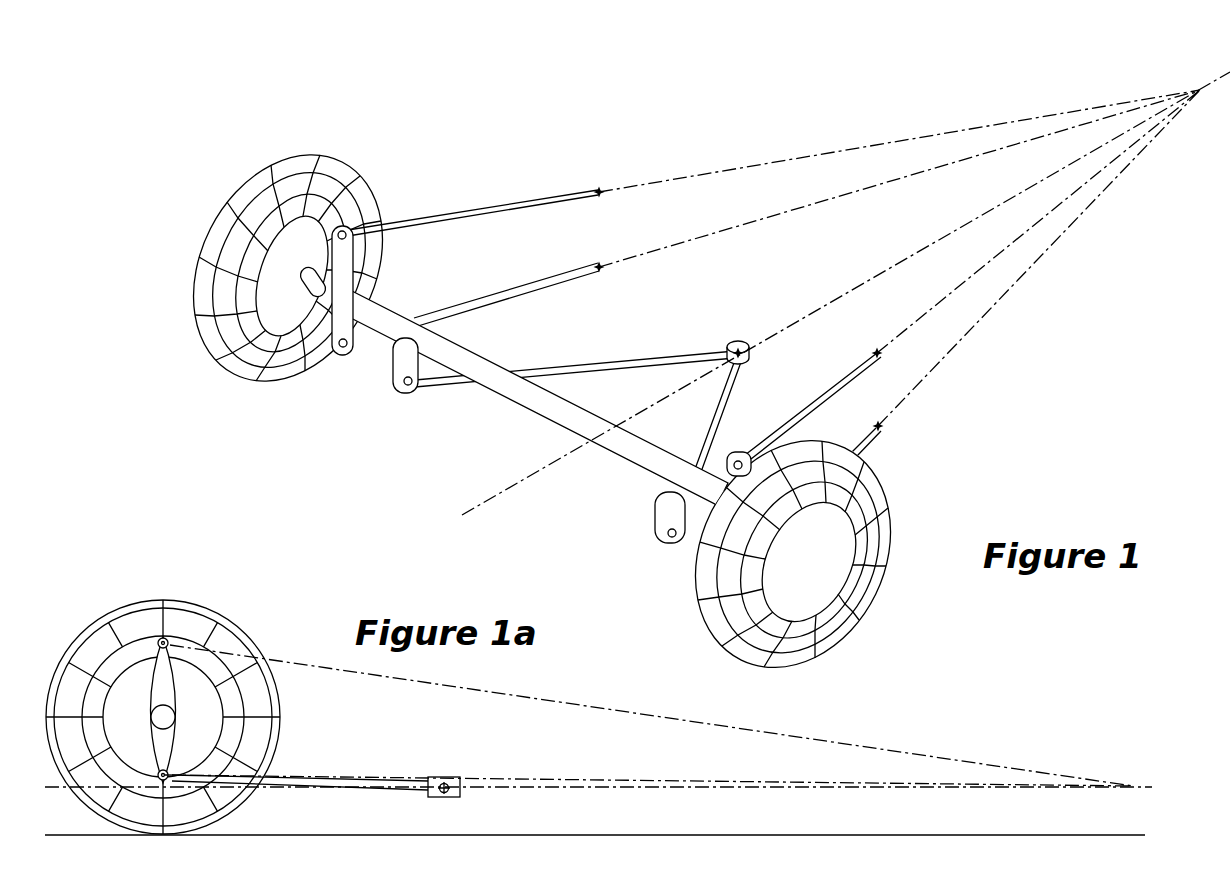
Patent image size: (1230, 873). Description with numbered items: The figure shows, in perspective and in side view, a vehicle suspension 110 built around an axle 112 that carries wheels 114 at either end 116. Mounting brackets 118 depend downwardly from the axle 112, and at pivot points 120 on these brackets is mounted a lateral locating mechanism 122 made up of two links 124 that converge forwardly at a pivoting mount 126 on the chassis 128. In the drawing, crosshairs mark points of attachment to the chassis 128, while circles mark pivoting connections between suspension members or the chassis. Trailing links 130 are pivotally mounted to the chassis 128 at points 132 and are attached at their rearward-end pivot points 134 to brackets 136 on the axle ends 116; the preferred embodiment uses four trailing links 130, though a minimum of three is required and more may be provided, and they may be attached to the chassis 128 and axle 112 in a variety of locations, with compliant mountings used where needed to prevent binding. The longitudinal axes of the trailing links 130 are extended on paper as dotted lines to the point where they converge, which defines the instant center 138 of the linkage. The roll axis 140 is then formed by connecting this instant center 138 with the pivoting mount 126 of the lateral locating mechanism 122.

In FIG. 1, the suspension 110 is at (937, 403).
In FIG. 1A, the suspension 110 is at (268, 618).
In FIG. 1, the axle 112 is at (548, 418).
In FIG. 1A, the axle 112 is at (166, 717).
In FIG. 1, the wheels 114 is at (320, 173).
In FIG. 1A, the wheels 114 is at (145, 621).
In FIG. 1, the axle ends 116 is at (318, 286).
In FIG. 1, the mounting brackets 118 is at (400, 362).
In FIG. 1, the pivot points 120 is at (407, 385).
In FIG. 1, the lateral locating mechanism 122 is at (652, 305).
In FIG. 1, the links 124 is at (712, 427).
In FIG. 1A, the links 124 is at (308, 781).
In FIG. 1, the pivoting mount 126 is at (733, 346).
In FIG. 1A, the pivoting mount 126 is at (446, 784).
In FIG. 1, the chassis 128 is at (750, 353).
In FIG. 1, the trailing links 130 is at (458, 308).
In FIG. 1, the points 132 is at (596, 265).
In FIG. 1, the pivot points 134 is at (352, 232).
In FIG. 1A, the pivot points 134 is at (168, 633).
In FIG. 1, the brackets 136 is at (350, 265).
In FIG. 1A, the brackets 136 is at (165, 672).
In FIG. 1, the instant center 138 is at (1197, 89).
In FIG. 1A, the instant center 138 is at (1135, 785).
In FIG. 1, the roll axis 140 is at (950, 232).
In FIG. 1A, the roll axis 140 is at (617, 789).